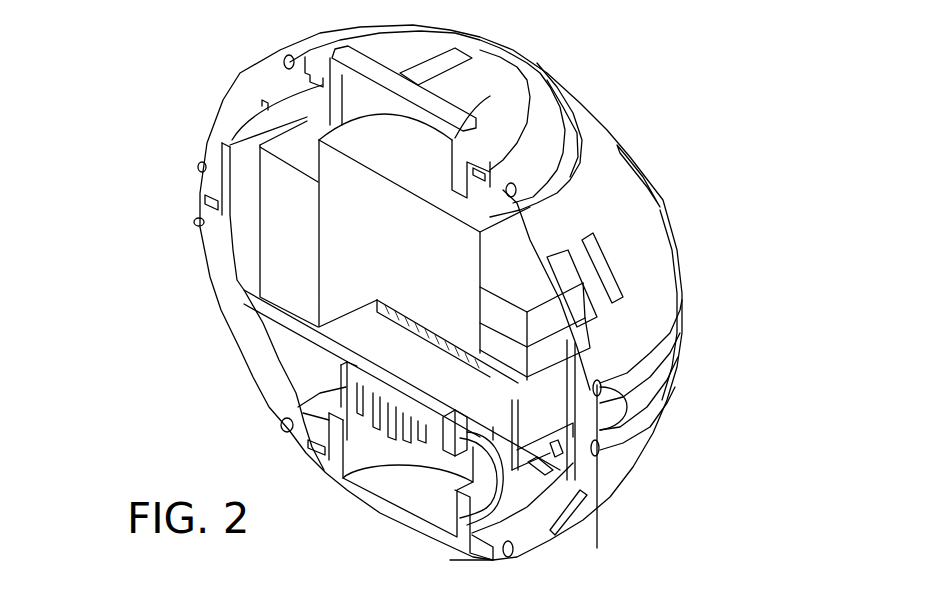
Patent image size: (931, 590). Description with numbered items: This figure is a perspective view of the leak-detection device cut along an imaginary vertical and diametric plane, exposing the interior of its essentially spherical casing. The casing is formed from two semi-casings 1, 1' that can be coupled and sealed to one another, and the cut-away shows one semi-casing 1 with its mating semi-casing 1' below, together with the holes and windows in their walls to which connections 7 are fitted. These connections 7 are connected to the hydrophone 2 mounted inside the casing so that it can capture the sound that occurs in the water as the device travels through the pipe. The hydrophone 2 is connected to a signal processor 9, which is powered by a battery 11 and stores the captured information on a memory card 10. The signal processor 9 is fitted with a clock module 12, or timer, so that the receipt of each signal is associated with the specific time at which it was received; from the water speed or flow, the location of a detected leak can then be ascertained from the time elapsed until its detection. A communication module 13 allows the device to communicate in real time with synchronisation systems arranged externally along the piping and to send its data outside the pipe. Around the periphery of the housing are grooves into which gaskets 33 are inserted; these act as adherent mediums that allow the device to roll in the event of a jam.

The semi-casing 1 is at (447, 292).
The semi-casing 1' is at (566, 430).
The hydrophone 2 is at (415, 240).
The connection 7 is at (488, 90).
The signal processor 9 is at (383, 376).
The memory card 10 is at (543, 353).
The battery 11 is at (283, 218).
The clock module 12 is at (518, 385).
The communication module 13 is at (545, 317).
The gasket 33 is at (284, 61).